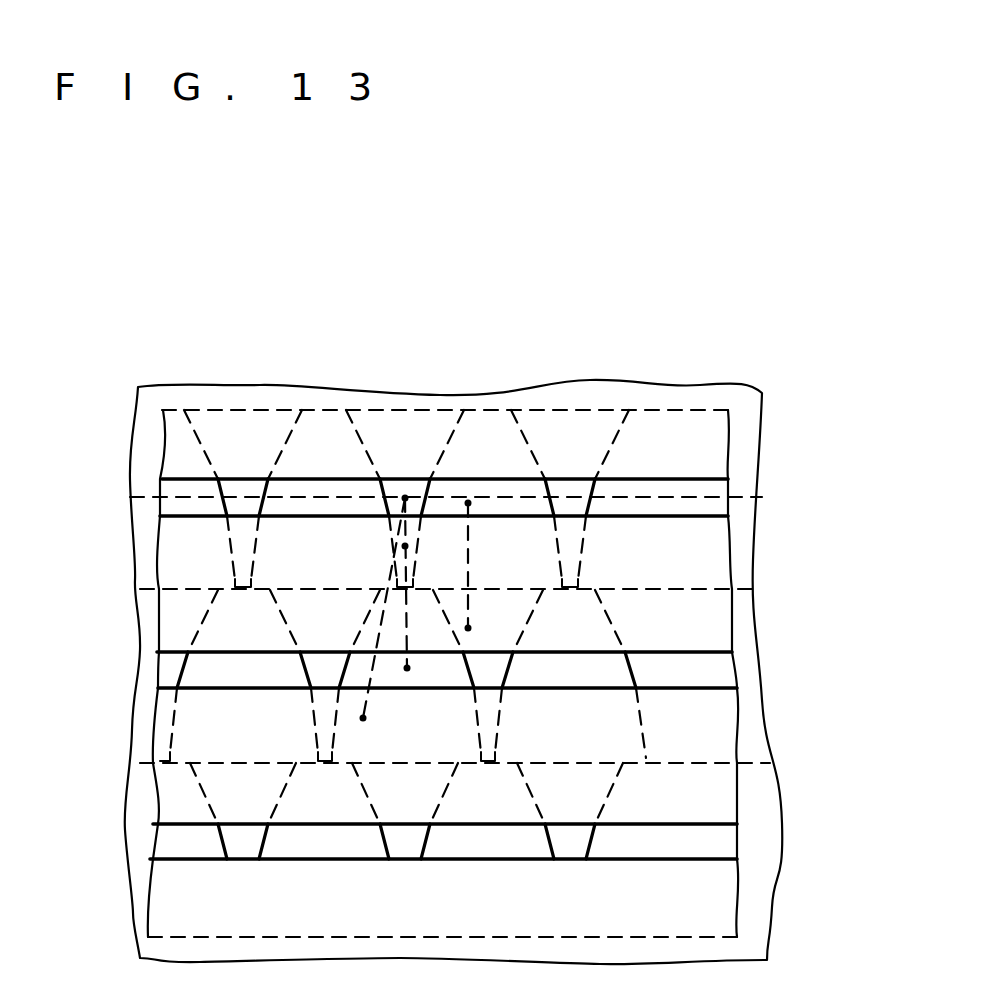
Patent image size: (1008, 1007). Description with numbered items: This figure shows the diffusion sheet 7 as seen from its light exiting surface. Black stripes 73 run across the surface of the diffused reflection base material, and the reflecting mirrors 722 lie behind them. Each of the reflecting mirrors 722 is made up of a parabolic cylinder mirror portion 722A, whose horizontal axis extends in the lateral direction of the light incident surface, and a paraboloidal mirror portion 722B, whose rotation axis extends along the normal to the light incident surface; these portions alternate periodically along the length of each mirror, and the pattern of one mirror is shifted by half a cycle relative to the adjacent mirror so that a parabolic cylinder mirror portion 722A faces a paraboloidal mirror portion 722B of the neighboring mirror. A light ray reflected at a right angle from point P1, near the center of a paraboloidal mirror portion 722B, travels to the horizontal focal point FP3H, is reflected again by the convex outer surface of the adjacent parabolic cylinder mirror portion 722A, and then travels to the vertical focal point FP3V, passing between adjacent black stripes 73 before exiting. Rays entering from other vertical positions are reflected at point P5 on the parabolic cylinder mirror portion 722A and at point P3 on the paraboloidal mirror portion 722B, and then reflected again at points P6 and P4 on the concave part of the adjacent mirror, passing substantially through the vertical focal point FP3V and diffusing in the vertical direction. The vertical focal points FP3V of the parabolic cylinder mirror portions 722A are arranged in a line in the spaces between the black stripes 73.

The diffusion sheet 7 is at (677, 377).
The black stripes 73 is at (697, 563).
The reflecting mirrors 722 is at (773, 592).
The parabolic cylinder mirror portion 722A is at (513, 608).
The paraboloidal mirror portion 722B is at (452, 732).
The vertical focal point FP3V is at (732, 497).
The horizontal focal point FP3H is at (405, 497).
The point P1 is at (407, 668).
The point P3 is at (363, 718).
The point P4 is at (405, 546).
The point P5 is at (468, 628).
The point P6 is at (468, 503).